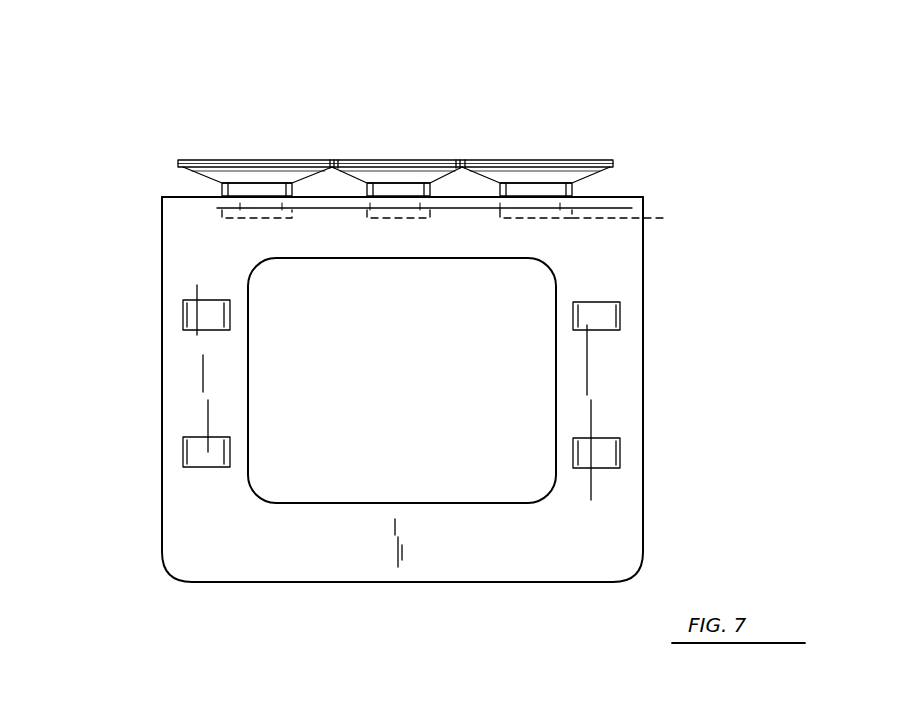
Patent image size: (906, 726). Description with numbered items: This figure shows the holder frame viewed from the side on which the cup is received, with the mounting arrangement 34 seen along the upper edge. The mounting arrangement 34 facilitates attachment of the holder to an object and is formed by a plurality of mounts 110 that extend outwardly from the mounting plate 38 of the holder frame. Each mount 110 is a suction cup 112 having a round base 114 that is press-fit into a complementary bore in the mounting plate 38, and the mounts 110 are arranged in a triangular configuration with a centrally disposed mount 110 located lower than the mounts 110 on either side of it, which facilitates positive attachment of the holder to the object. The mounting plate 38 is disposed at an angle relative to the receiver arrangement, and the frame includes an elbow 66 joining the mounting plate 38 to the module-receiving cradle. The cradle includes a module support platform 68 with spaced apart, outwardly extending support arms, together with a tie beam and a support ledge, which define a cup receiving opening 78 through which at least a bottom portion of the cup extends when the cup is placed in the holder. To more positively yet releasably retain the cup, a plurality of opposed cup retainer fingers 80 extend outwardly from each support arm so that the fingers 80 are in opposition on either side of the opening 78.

The mounting arrangement 34 is at (449, 133).
The mounting plate 38 is at (608, 182).
The elbow 66 is at (163, 198).
The module support platform 68 is at (660, 522).
The cup receiving opening 78 is at (288, 476).
The cup retainer finger 80 is at (185, 312).
The mount 110 is at (318, 122).
The suction cup 112 is at (313, 158).
The round base 114 is at (375, 228).